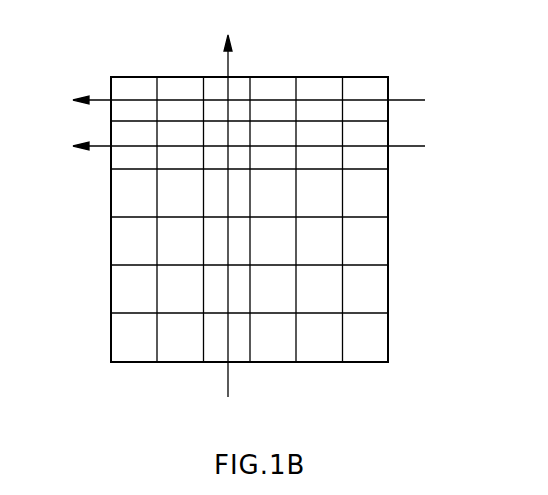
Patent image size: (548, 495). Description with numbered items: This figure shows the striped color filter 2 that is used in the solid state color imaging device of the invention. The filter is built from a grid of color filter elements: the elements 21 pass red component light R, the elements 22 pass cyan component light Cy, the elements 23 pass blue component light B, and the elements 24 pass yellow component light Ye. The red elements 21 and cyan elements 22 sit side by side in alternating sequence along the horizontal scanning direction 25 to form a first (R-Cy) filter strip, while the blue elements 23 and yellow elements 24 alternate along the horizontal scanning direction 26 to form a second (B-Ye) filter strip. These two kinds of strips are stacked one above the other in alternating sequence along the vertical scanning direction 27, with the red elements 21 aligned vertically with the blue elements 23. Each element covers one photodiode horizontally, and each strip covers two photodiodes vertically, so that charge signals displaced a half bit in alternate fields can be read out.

The striped color filter 2 is at (388, 253).
The color filter element 21 is at (134, 82).
The color filter element 22 is at (184, 82).
The color filter element 23 is at (118, 158).
The color filter element 24 is at (357, 354).
The horizontal scanning direction 25 is at (412, 100).
The horizontal scanning direction 26 is at (412, 146).
The vertical scanning direction 27 is at (228, 370).